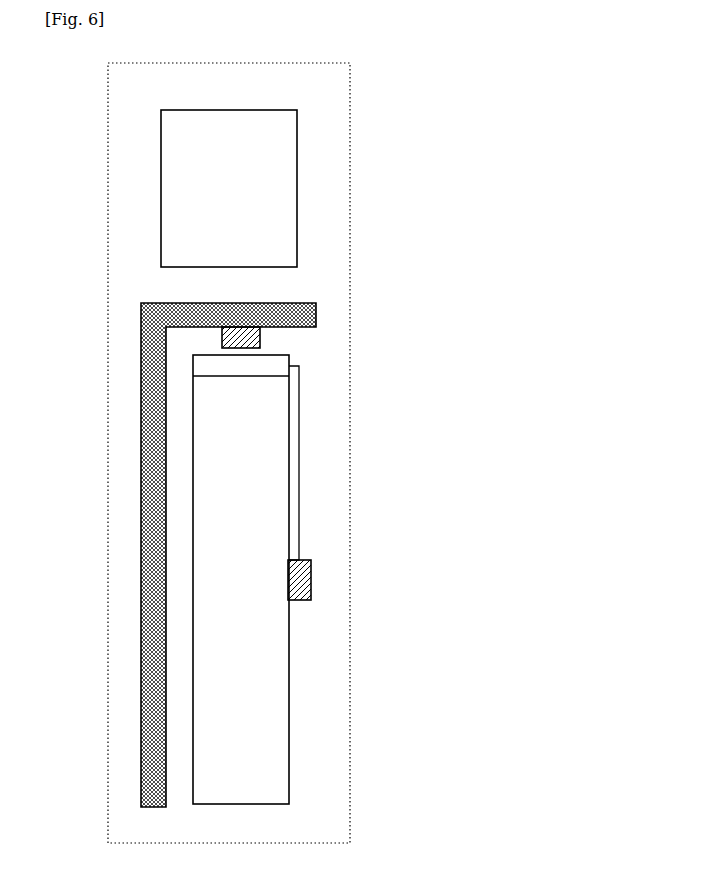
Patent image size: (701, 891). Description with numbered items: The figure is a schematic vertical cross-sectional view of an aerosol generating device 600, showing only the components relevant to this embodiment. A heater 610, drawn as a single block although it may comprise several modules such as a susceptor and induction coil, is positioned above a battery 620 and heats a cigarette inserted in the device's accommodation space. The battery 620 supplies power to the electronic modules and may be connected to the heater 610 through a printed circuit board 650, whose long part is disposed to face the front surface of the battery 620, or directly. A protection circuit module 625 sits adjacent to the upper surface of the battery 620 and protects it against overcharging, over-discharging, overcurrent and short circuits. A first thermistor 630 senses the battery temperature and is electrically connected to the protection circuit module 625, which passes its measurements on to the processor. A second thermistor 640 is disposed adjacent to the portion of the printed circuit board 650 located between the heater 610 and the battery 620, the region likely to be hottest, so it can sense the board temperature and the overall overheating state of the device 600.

The aerosol generating device 600 is at (311, 61).
The heater 610 is at (231, 109).
The battery 620 is at (282, 659).
The protection circuit module (PCM) 625 is at (277, 362).
The first thermistor 630 is at (300, 580).
The second thermistor 640 is at (260, 342).
The printed circuit board (PCB) 650 is at (150, 663).